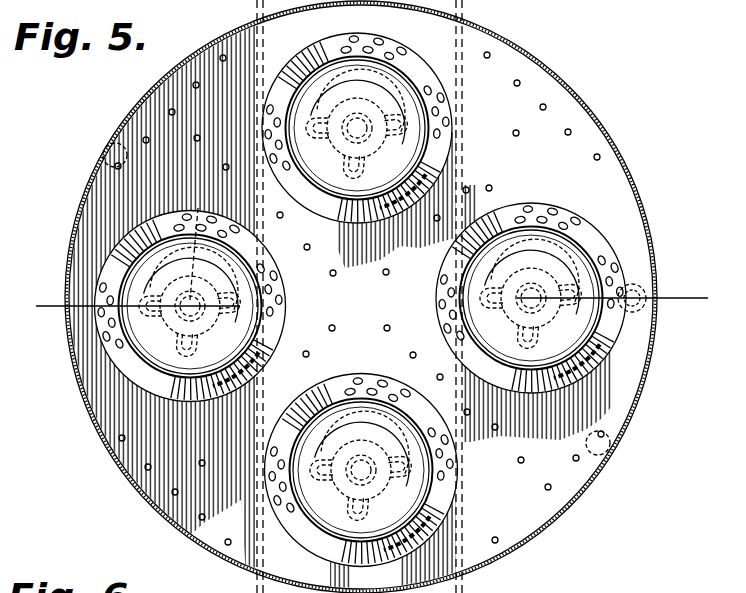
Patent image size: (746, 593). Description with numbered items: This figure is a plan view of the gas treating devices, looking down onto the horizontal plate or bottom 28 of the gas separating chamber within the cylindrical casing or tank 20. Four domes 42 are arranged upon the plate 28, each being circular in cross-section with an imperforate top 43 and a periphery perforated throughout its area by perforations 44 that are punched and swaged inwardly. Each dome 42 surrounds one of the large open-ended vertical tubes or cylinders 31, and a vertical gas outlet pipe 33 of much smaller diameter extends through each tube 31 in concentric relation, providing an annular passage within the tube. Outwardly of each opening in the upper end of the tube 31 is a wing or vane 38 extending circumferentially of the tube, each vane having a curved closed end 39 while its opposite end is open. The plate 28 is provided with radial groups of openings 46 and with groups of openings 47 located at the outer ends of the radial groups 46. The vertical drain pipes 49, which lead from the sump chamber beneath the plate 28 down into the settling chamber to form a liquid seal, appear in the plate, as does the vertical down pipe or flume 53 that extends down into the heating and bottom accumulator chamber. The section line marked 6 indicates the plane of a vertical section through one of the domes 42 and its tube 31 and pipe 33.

The section line 6- 6 is at (369, 303).
The vertical casing or tank 20 is at (643, 408).
The horizontal plate or bottom 28 is at (149, 452).
The vertical tube or cylinder 31 is at (193, 242).
The vertical gas outlet pipe 33 is at (213, 317).
The wing or vane 38 is at (194, 273).
The curved closed end 39 is at (176, 270).
The dome 42 is at (153, 387).
The imperforate top 43 is at (150, 360).
The perforations 44 is at (112, 354).
The radial groups of openings 46 is at (333, 270).
The groups of openings 47 is at (196, 88).
The vertical drain pipe 49 is at (123, 168).
The vertical down pipe or flume 53 is at (647, 310).